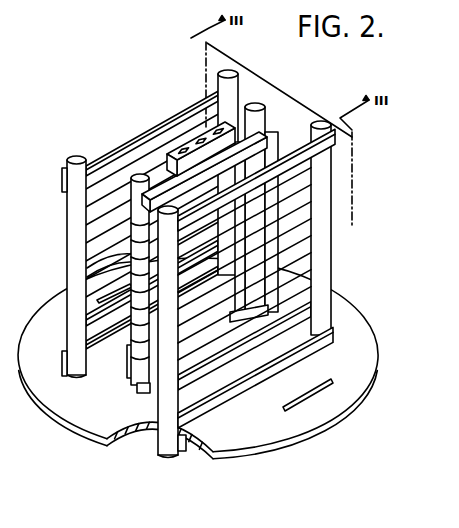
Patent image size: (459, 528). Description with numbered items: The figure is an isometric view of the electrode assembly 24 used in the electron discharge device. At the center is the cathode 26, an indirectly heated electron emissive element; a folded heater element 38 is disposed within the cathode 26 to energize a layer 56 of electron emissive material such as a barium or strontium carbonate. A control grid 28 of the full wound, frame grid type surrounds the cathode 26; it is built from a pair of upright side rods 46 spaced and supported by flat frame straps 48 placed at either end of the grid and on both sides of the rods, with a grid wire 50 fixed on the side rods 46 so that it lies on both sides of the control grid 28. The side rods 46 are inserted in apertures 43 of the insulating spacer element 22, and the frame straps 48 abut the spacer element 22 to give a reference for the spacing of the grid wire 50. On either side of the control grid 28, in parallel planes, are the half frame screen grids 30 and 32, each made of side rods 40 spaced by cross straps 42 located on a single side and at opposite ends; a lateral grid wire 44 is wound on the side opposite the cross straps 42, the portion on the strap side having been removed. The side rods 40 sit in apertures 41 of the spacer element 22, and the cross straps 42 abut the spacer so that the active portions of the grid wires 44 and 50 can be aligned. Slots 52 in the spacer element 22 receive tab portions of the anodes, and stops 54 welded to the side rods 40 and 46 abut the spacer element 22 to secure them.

The insulating spacer element 22 is at (353, 320).
The electrode assembly 24 is at (366, 273).
The cathode 26 is at (174, 155).
The control grid 28 is at (268, 97).
The screen grid 30 is at (67, 203).
The screen grid 32 is at (377, 253).
The folded heater element 38 is at (200, 137).
The side rod 40 is at (67, 257).
The aperture 41 is at (157, 420).
The cross strap 42 is at (63, 355).
The aperture 43 is at (137, 390).
The lateral grid wire 44 is at (88, 320).
The side rod 46 is at (268, 168).
The frame strap 48 is at (128, 374).
The grid wire 50 is at (86, 280).
The slot 52 is at (330, 380).
The stop 54 is at (182, 452).
The layer of electron emissive material 56 is at (152, 192).